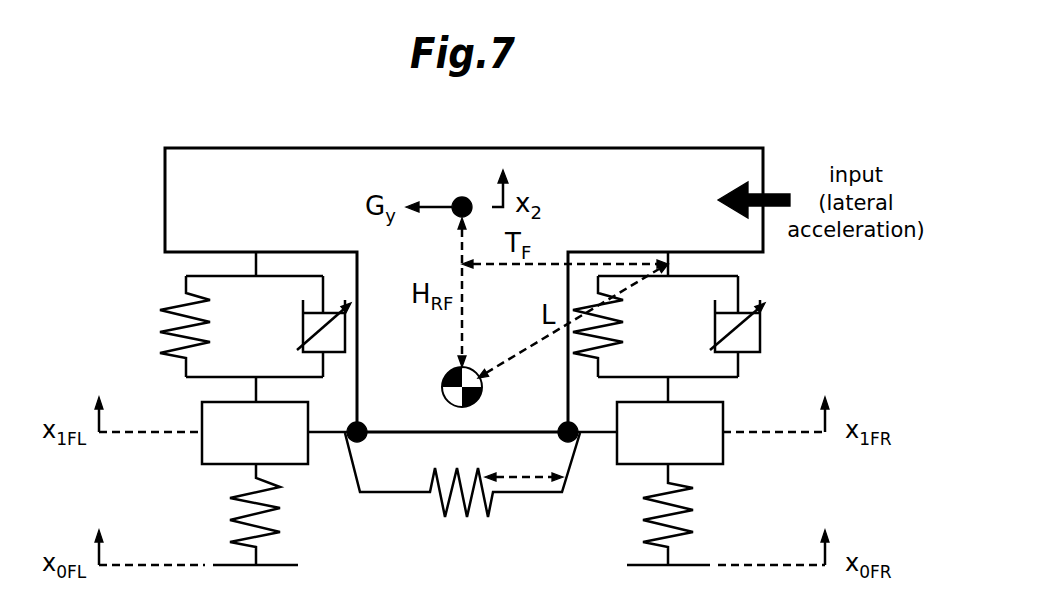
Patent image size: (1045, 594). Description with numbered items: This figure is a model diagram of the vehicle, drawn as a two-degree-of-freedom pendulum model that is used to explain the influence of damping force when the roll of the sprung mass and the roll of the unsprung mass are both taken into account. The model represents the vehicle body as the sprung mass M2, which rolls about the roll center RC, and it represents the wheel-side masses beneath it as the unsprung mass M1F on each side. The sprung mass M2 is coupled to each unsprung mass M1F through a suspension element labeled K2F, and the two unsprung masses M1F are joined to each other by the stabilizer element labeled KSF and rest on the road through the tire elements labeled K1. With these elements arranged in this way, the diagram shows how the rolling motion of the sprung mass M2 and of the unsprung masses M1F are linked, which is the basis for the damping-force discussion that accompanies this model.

The sprung mass (vehicle body) M2 is at (464, 290).
The front unsprung mass M1F is at (462, 420).
The tire spring constant K1 is at (463, 514).
The front suspension spring / variable damper K2F is at (460, 314).
The front stabilizer spring constant KSF is at (462, 490).
The front roll center RC is at (504, 387).